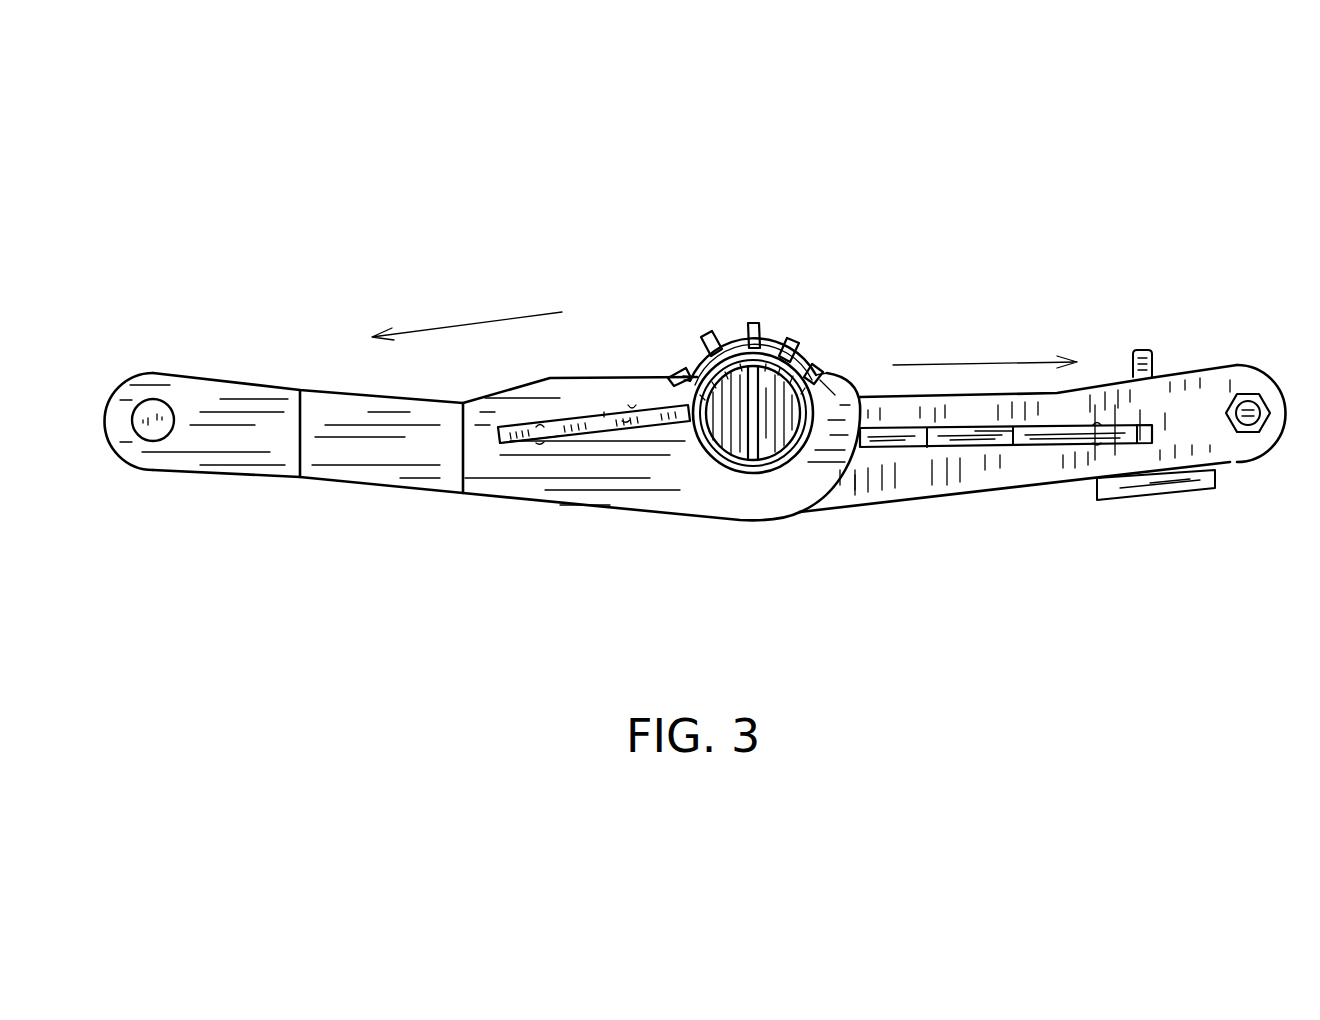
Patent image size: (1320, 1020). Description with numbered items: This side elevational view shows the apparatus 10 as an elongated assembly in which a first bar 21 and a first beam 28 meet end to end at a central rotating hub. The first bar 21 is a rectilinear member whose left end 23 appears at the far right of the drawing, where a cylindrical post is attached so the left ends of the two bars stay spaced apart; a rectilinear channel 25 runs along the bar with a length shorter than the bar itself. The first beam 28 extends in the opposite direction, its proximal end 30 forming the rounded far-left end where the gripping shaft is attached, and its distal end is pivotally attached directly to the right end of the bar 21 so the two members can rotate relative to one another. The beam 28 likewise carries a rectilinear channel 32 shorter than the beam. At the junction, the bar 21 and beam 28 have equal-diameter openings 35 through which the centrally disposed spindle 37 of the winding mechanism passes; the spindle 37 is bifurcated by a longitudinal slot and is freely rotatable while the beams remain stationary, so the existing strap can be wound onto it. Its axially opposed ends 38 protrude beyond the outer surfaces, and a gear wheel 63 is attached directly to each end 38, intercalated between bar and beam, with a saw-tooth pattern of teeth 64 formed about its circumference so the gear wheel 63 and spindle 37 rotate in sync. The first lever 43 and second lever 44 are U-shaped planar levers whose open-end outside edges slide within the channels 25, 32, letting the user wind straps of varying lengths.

The apparatus 10 is at (172, 166).
The first bar 21 is at (917, 483).
The left end 23 is at (1278, 412).
The rectilinear channel 25 is at (1041, 468).
The first beam 28 is at (373, 473).
The proximal end 30 is at (117, 413).
The rectilinear channel 32 is at (543, 462).
The opening 35 is at (793, 484).
The spindle 37 is at (712, 420).
The opposed end 38 is at (765, 453).
The first lever 43 is at (983, 447).
The second lever 44 is at (607, 420).
The gear wheel 63 is at (808, 347).
The teeth 64 is at (675, 373).